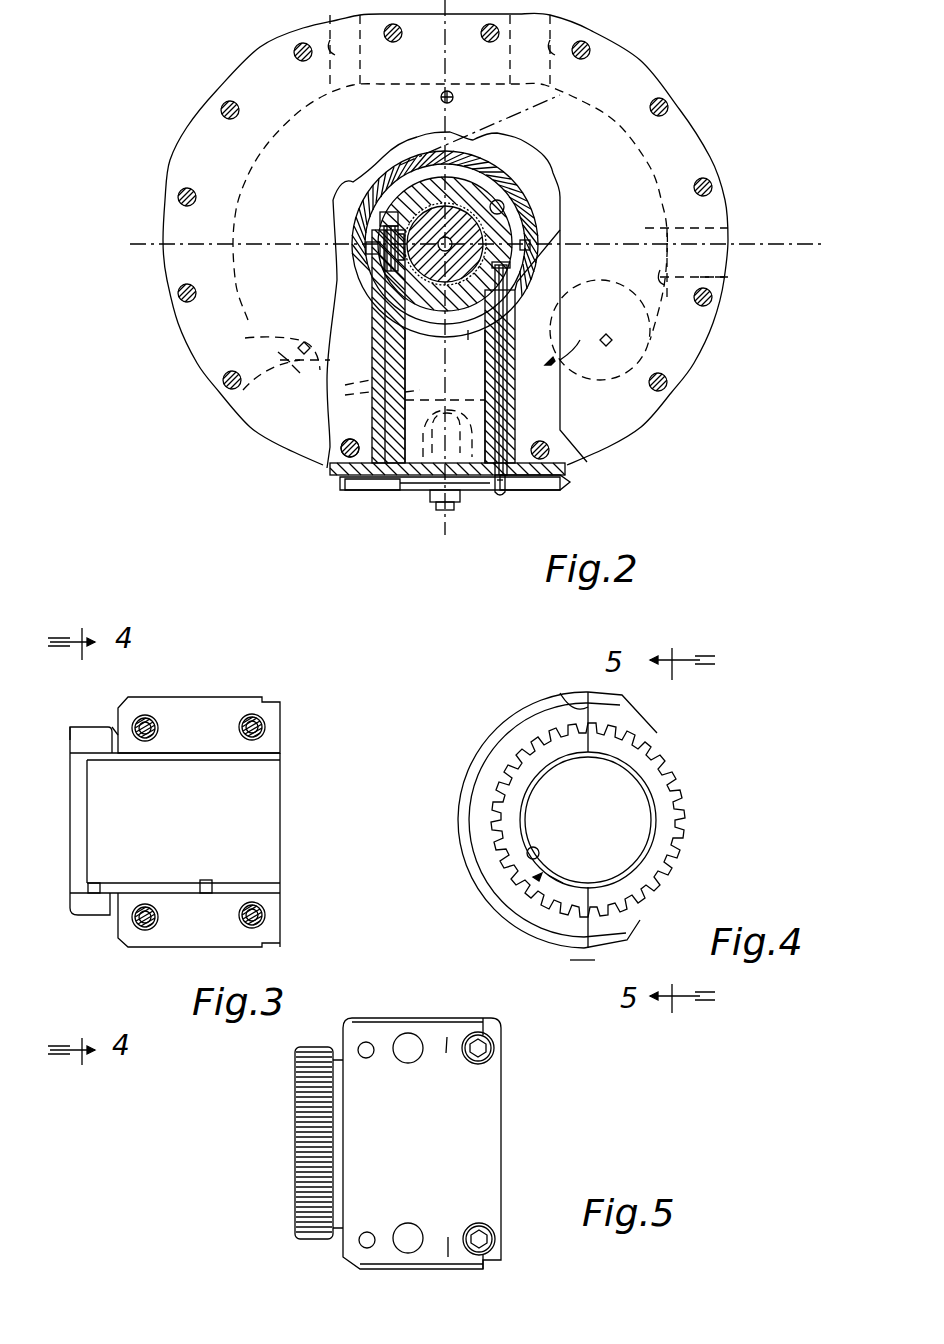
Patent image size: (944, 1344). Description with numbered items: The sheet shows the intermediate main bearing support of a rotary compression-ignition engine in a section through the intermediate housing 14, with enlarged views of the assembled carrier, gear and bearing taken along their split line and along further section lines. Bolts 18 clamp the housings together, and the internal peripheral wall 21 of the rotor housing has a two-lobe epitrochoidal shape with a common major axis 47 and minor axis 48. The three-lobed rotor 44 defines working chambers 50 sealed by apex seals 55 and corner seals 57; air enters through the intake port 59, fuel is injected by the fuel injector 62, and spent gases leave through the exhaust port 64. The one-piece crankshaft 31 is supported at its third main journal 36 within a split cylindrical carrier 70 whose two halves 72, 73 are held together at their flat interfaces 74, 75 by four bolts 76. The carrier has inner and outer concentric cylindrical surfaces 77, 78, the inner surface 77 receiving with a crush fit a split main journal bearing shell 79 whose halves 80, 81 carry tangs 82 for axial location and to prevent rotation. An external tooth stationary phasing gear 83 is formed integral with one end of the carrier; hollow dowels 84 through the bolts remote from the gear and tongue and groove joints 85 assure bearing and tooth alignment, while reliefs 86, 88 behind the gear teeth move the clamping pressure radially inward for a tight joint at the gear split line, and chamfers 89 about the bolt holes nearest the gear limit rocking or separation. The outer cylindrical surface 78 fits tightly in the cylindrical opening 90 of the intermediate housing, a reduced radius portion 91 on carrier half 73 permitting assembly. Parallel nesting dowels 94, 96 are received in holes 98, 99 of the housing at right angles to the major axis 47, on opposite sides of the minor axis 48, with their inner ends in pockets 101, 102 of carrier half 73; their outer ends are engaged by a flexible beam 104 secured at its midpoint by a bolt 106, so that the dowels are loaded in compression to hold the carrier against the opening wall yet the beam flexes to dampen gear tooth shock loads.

In FIG. 2, the intermediate housing 14 is at (238, 93).
In FIG. 2, the bolts 18 is at (190, 195).
In FIG. 2, the internal peripheral wall 21 is at (727, 277).
In FIG. 2, the crankshaft 31 is at (468, 340).
In FIG. 2, the third main journal 36 is at (436, 325).
In FIG. 2, the rotor 44 is at (640, 333).
In FIG. 2, the major axis 47 is at (772, 250).
In FIG. 2, the minor axis 48 is at (495, 120).
In FIG. 2, the working chambers 50 is at (727, 222).
In FIG. 2, the apex seals 55 is at (295, 360).
In FIG. 2, the corner seals 57 is at (275, 340).
In FIG. 2, the intake port 59 is at (590, 33).
In FIG. 2, the fuel injector 62 is at (480, 493).
In FIG. 2, the exhaust port 64 is at (333, 30).
In FIG. 2, the split cylindrical carrier 70 is at (520, 230).
In FIG. 3, the split cylindrical carrier 70 is at (206, 692).
In FIG. 4, the split cylindrical carrier 70 is at (486, 744).
In FIG. 5, the split cylindrical carrier 70 is at (503, 1129).
In FIG. 2, the carrier half 72 is at (432, 167).
In FIG. 3, the carrier half 72 is at (180, 695).
In FIG. 4, the carrier half 72 is at (577, 927).
In FIG. 2, the carrier half 73 is at (375, 323).
In FIG. 4, the carrier half 73 is at (632, 910).
In FIG. 5, the carrier half 73 is at (487, 1160).
In FIG. 3, the flat interface 74 is at (235, 710).
In FIG. 4, the flat interface 74 is at (593, 722).
In FIG. 4, the flat interface 75 is at (567, 693).
In FIG. 2, the bolts 76 is at (373, 227).
In FIG. 3, the bolts 76 is at (145, 718).
In FIG. 5, the bolts 76 is at (362, 1045).
In FIG. 4, the inner cylindrical surface 77 is at (523, 872).
In FIG. 2, the outer cylindrical surface 78 is at (407, 160).
In FIG. 4, the outer cylindrical surface 78 is at (462, 835).
In FIG. 2, the split main journal bearing shell 79 is at (405, 220).
In FIG. 4, the split main journal bearing shell 79 is at (540, 877).
In FIG. 3, the bearing shell half 80 is at (270, 882).
In FIG. 4, the bearing shell half 80 is at (563, 883).
In FIG. 4, the bearing shell half 81 is at (652, 842).
In FIG. 3, the tangs 82 is at (205, 880).
In FIG. 3, the stationary phasing gear 83 is at (75, 730).
In FIG. 4, the stationary phasing gear 83 is at (502, 787).
In FIG. 5, the stationary phasing gear 83 is at (310, 1172).
In FIG. 2, the hollow dowels 84 is at (373, 248).
In FIG. 3, the hollow dowels 84 is at (265, 730).
In FIG. 2, the tongue and groove joints 85 is at (380, 260).
In FIG. 5, the tongue and groove joints 85 is at (468, 1032).
In FIG. 3, the relief 86 is at (110, 745).
In FIG. 3, the relief 88 is at (112, 905).
In FIG. 3, the chamfers 89 is at (150, 735).
In FIG. 2, the cylindrical opening 90 is at (518, 197).
In FIG. 2, the reduced radius portion 91 is at (507, 323).
In FIG. 4, the reduced radius portion 91 is at (678, 767).
In FIG. 2, the nesting dowel 94 is at (522, 475).
In FIG. 2, the nesting dowel 96 is at (367, 455).
In FIG. 2, the hole 98 is at (520, 368).
In FIG. 2, the hole 99 is at (390, 487).
In FIG. 2, the pocket 101 is at (498, 273).
In FIG. 5, the pocket 101 is at (408, 1040).
In FIG. 5, the pocket 102 is at (418, 1233).
In FIG. 2, the flexible beam 104 is at (500, 492).
In FIG. 2, the bolt 106 is at (437, 507).